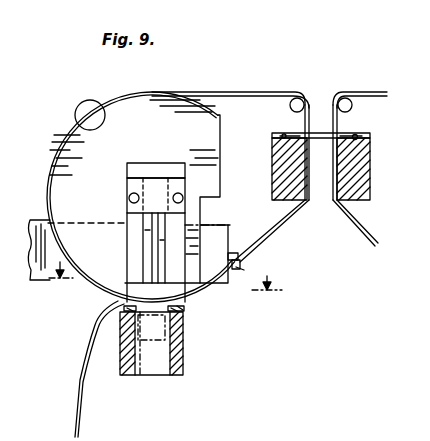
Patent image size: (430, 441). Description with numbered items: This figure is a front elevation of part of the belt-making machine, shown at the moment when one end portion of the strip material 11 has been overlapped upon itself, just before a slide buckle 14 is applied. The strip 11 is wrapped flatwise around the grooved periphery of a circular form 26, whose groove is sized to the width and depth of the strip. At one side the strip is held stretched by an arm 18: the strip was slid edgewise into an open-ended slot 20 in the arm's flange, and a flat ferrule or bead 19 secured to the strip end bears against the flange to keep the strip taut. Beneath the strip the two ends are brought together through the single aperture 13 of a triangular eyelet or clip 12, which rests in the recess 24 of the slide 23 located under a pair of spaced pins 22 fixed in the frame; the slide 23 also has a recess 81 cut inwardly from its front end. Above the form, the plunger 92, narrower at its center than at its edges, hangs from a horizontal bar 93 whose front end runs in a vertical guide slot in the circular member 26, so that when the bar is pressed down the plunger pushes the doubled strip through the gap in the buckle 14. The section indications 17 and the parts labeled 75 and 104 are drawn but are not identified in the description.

The strip material 11 is at (360, 236).
The eyelet or clip 12 is at (356, 135).
The aperture 13 is at (318, 134).
The buckle 14 is at (184, 310).
The section line 17 is at (165, 288).
The arms 18 is at (46, 279).
The ferrule or bead 19 is at (240, 262).
The open-ended slot 20 is at (240, 271).
The spaced pins 22 is at (290, 104).
The slide 23 is at (362, 177).
The recess 24 is at (358, 140).
The circular form 26 is at (164, 131).
The block 75 is at (183, 363).
The recess 81 is at (152, 366).
The plunger 92 is at (148, 233).
The horizontal bar 93 is at (172, 182).
The roller 104 is at (92, 101).